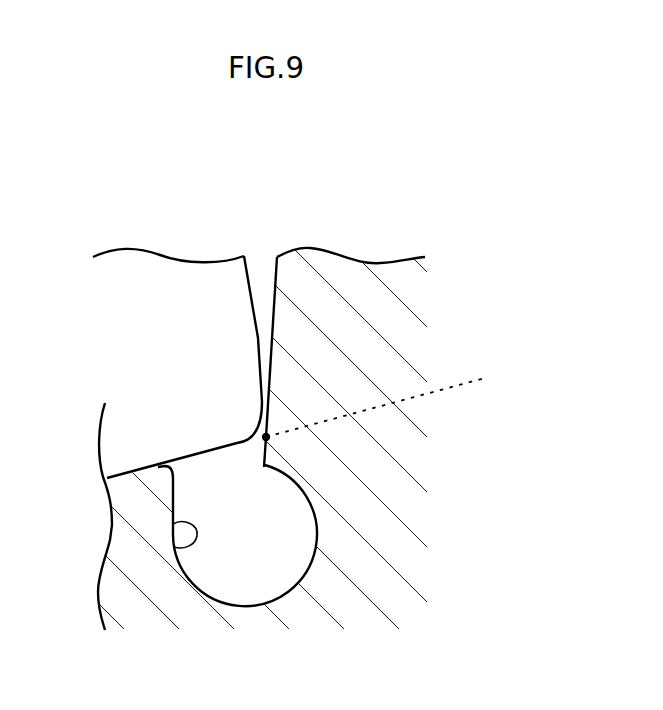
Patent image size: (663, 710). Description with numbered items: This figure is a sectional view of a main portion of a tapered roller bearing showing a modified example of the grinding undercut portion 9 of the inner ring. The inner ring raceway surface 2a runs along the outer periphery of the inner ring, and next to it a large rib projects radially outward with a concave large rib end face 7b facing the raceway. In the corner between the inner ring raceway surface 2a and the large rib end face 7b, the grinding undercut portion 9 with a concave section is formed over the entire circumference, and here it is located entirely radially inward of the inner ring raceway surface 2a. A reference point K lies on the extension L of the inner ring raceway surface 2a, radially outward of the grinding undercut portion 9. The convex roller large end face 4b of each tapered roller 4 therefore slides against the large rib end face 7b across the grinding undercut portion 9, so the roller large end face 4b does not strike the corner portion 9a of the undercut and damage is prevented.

The tapered roller 4 is at (187, 229).
The roller large end face 4b is at (258, 335).
The large rib end face 7b is at (276, 273).
The inner ring raceway surface 2a is at (158, 467).
The grinding undercut portion 9 is at (197, 537).
The corner portion 9a is at (263, 468).
The reference point K is at (266, 437).
The extension of the inner ring raceway surface L is at (462, 388).